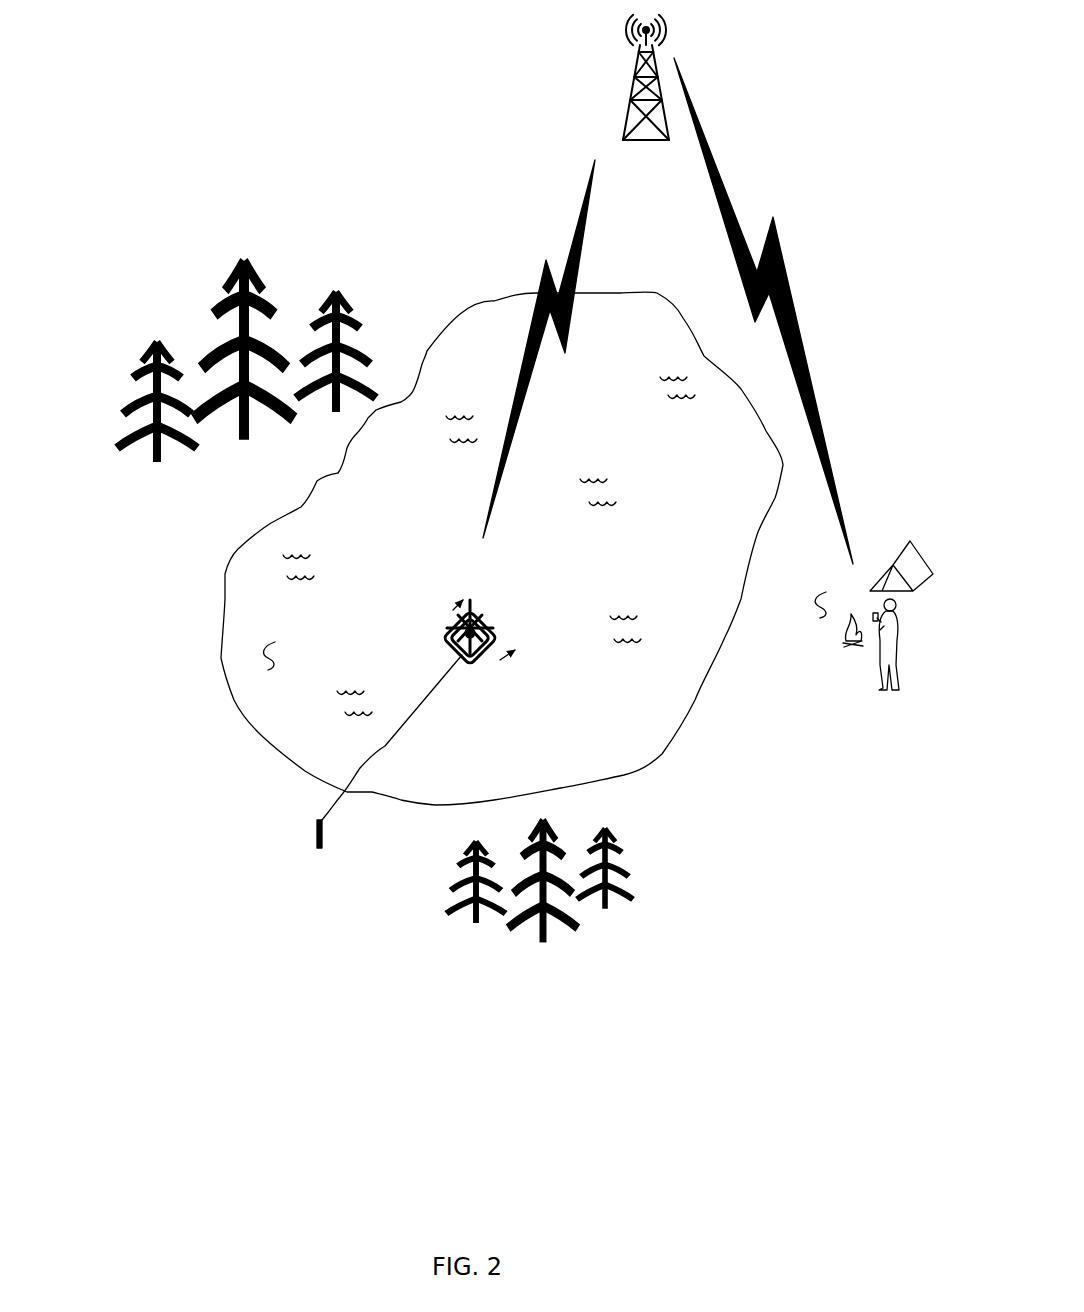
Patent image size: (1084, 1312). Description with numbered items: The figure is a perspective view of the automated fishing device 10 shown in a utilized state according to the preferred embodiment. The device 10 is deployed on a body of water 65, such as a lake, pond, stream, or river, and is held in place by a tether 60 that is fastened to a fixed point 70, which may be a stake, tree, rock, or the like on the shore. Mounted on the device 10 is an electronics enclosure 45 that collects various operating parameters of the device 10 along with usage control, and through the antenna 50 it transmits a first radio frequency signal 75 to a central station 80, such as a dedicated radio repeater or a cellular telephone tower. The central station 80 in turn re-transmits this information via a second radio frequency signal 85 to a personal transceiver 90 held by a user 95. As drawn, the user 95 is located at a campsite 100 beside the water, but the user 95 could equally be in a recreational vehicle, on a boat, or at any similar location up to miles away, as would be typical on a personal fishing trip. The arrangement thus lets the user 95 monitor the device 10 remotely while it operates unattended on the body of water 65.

The automated fishing device 10 is at (445, 595).
The electronics enclosure 45 is at (456, 615).
The antenna 50 is at (458, 610).
The tether 60 is at (385, 746).
The body of water 65 is at (267, 655).
The fixed point 70 is at (318, 841).
The first radio frequency signal 75 is at (540, 320).
The central station 80 is at (635, 77).
The second radio frequency signal 85 is at (728, 198).
The personal transceiver 90 is at (857, 640).
The user 95 is at (880, 620).
The campsite 100 is at (817, 613).